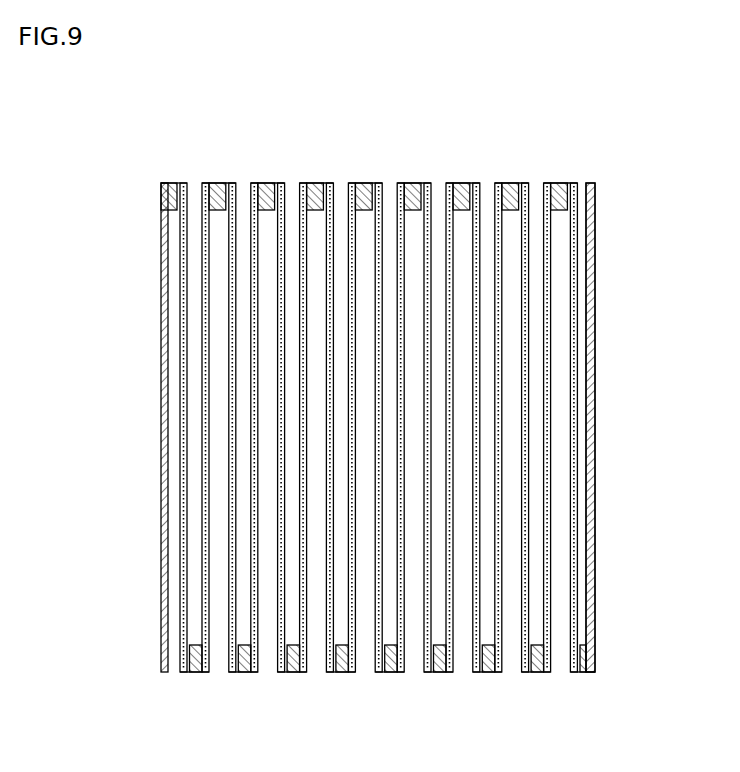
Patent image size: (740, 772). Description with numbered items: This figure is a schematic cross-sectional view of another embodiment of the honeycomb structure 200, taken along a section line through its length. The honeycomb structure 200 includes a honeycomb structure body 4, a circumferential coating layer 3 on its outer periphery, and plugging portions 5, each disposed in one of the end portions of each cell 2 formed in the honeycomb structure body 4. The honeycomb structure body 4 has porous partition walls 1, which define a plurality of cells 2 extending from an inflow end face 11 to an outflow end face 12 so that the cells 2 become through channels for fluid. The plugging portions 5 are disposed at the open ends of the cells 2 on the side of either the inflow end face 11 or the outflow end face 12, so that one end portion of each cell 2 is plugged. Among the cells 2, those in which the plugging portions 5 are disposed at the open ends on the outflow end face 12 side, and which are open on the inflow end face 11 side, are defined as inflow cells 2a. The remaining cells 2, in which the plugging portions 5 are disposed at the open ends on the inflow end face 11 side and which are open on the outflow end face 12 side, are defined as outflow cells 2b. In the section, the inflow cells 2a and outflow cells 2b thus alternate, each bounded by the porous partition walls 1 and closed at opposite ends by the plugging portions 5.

The honeycomb structure 200 is at (632, 73).
The porous partition walls 1 is at (428, 200).
The cells 2 is at (378, 432).
The inflow cells 2a is at (343, 200).
The outflow cells 2b is at (362, 660).
The circumferential coating layer 3 is at (597, 265).
The honeycomb structure body 4 is at (603, 365).
The plugging portions 5 is at (521, 195).
The inflow end face 11 is at (185, 168).
The outflow end face 12 is at (180, 682).